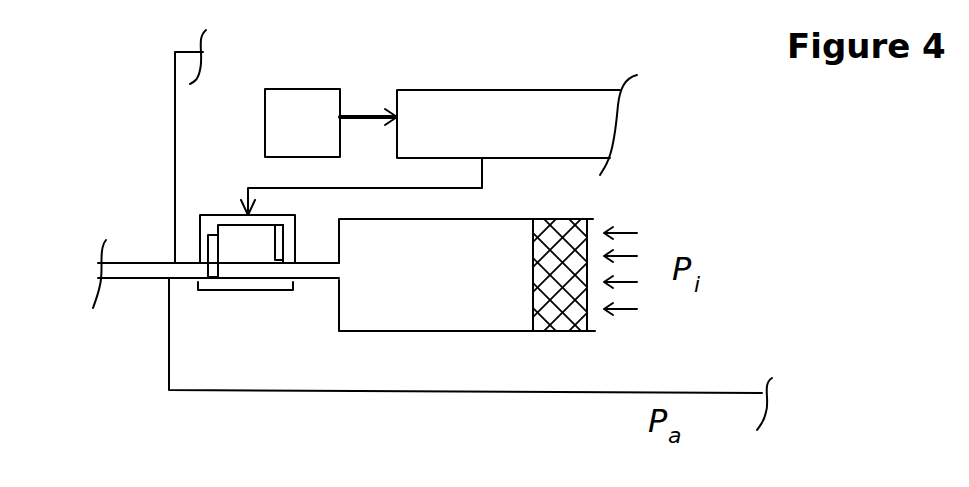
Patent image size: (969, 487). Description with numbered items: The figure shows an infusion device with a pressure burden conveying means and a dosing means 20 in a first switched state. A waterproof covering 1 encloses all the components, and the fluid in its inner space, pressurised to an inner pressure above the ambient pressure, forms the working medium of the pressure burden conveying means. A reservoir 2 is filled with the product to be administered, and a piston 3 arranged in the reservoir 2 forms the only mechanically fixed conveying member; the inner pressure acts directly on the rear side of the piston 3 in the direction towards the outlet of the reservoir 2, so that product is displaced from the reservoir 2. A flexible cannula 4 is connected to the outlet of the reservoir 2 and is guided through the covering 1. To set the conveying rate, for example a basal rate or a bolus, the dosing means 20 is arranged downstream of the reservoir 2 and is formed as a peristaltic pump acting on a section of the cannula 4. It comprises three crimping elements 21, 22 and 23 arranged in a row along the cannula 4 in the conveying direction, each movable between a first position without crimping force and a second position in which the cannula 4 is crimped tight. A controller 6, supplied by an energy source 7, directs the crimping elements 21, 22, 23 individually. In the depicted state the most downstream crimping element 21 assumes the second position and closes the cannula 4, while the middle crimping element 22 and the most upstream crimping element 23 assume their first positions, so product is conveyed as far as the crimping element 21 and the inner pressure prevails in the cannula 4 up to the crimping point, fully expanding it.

The covering 1 is at (175, 72).
The reservoir 2 is at (445, 308).
The piston 3 is at (552, 323).
The flexible cannula 4 is at (312, 273).
The controller 6 is at (439, 145).
The energy source 7 is at (331, 123).
The dosing means 20 is at (200, 220).
The crimping element 21 is at (213, 277).
The crimping element 22 is at (249, 252).
The crimping element 23 is at (278, 253).